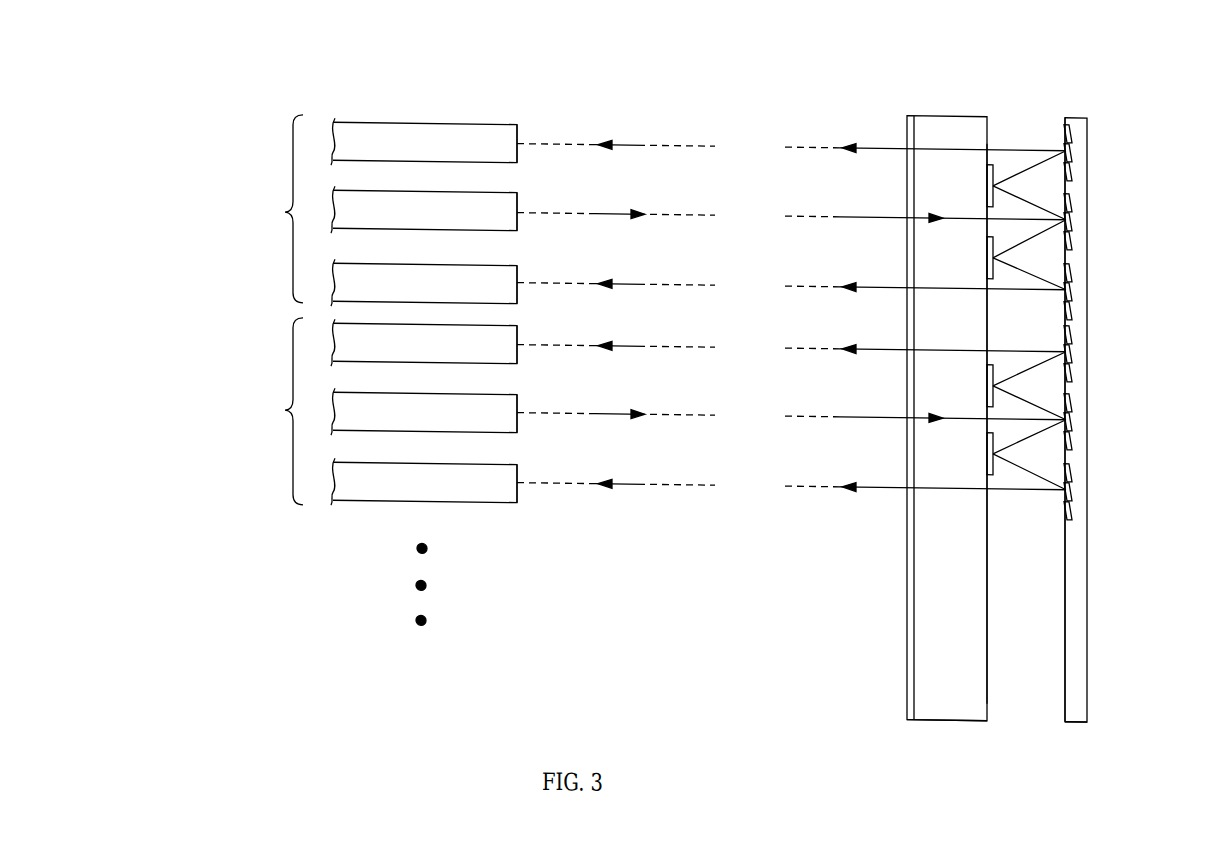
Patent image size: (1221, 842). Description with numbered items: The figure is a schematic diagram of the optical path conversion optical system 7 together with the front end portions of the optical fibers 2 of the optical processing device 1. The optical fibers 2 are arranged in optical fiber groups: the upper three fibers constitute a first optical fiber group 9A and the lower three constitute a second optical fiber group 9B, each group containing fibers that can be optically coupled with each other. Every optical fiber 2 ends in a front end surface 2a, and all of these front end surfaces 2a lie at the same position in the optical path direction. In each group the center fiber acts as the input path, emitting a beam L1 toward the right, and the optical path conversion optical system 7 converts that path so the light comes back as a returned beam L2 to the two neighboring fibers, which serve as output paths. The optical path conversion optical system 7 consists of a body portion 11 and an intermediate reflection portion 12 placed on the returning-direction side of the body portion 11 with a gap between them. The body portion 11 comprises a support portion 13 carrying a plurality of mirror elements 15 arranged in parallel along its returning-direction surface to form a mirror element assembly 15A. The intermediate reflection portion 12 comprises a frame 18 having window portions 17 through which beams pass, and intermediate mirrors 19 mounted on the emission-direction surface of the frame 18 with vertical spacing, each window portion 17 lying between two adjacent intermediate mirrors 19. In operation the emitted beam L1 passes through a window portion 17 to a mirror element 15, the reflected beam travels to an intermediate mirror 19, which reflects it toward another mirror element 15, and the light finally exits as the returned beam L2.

The optical fiber array 1 is at (499, 88).
The optical fiber 2 is at (395, 127).
The front end surface 2a is at (517, 127).
The optical path conversion optical system 7 is at (1038, 50).
The first optical fiber group 9A is at (280, 208).
The second optical fiber group 9B is at (280, 411).
The body portion 11 is at (1078, 113).
The intermediate reflection portion 12 is at (947, 113).
The support portion 13 is at (1086, 717).
The mirror element 15 is at (1073, 167).
The mirror element assembly 15A is at (1056, 104).
The window portion 17 is at (985, 157).
The frame 18 is at (987, 686).
The intermediate mirror 19 is at (1010, 526).
The beam L1 is at (613, 213).
The returned beam L2 is at (641, 145).